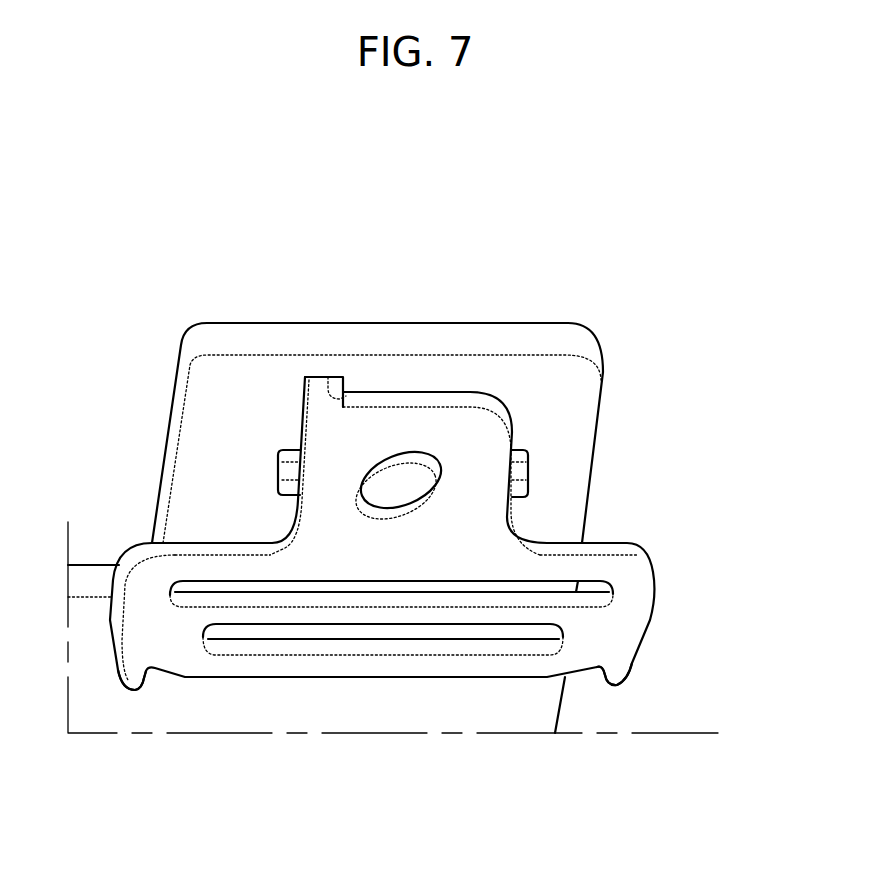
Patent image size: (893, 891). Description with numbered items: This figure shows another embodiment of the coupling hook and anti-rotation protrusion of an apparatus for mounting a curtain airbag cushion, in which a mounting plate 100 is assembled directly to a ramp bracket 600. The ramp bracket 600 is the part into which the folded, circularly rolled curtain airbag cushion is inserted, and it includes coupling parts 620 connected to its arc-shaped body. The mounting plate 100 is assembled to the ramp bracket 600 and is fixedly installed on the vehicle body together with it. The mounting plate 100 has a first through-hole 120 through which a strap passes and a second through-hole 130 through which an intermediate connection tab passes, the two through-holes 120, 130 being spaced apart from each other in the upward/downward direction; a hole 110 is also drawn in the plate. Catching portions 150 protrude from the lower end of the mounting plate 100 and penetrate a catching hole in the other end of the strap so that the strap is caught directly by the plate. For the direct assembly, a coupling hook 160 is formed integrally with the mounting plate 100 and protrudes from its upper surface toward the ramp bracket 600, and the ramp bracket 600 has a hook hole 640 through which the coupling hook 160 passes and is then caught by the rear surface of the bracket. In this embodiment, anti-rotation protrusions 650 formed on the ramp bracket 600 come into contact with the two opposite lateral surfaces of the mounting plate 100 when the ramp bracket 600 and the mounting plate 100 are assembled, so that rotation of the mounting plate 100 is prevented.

The mounting plate 100 is at (430, 433).
The fastening hole 110 is at (400, 480).
The first through-hole 120 is at (482, 592).
The second through-hole 130 is at (378, 633).
The catching portion 150 is at (140, 683).
The coupling hook 160 is at (312, 375).
The ramp bracket 600 is at (594, 318).
The coupling part 620 is at (553, 390).
The hook hole 640 is at (360, 386).
The anti-rotation protrusion 650 is at (278, 480).